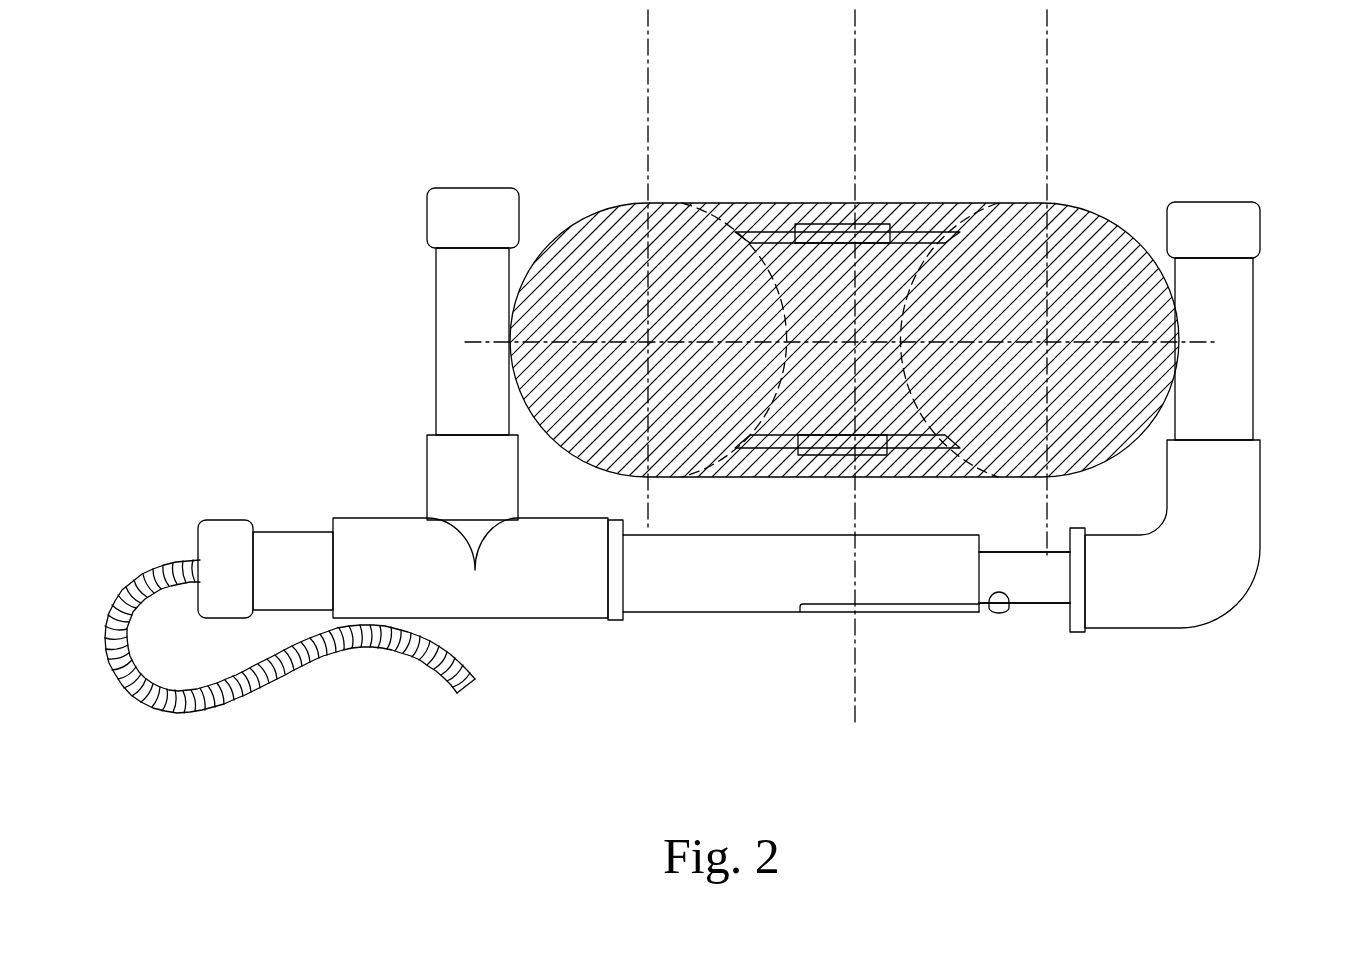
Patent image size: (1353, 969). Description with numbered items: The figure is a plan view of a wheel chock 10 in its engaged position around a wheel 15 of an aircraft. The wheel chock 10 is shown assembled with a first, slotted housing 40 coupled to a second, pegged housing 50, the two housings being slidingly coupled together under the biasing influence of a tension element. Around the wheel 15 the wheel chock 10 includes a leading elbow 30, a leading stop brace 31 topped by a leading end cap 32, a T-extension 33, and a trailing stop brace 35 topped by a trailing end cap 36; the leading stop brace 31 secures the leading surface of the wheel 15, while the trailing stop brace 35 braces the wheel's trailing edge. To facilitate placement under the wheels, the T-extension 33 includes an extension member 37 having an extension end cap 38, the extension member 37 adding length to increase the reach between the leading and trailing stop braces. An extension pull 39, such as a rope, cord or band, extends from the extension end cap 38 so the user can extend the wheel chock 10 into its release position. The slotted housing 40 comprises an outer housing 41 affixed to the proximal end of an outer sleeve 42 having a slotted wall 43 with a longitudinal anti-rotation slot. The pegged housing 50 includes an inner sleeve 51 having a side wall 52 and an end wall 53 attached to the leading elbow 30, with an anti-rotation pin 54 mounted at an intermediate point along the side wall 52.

The wheel chock 10 is at (895, 728).
The wheel 15 is at (1093, 238).
The leading elbow 30 is at (1217, 623).
The leading stop brace 31 is at (1256, 323).
The leading end cap 32 is at (1262, 220).
The T-extension 33 is at (383, 518).
The trailing stop brace 35 is at (436, 320).
The trailing end cap 36 is at (427, 203).
The extension member 37 is at (297, 530).
The extension end cap 38 is at (230, 518).
The extension pull 39 is at (328, 653).
The slotted housing 40 is at (762, 590).
The outer housing 41 is at (614, 622).
The outer sleeve 42 is at (730, 613).
The slotted wall 43 is at (895, 615).
The pegged housing 50 is at (1055, 582).
The inner sleeve 51 is at (1045, 563).
The side wall 52 is at (1060, 605).
The end wall 53 is at (1080, 633).
The anti-rotation pin 54 is at (987, 610).